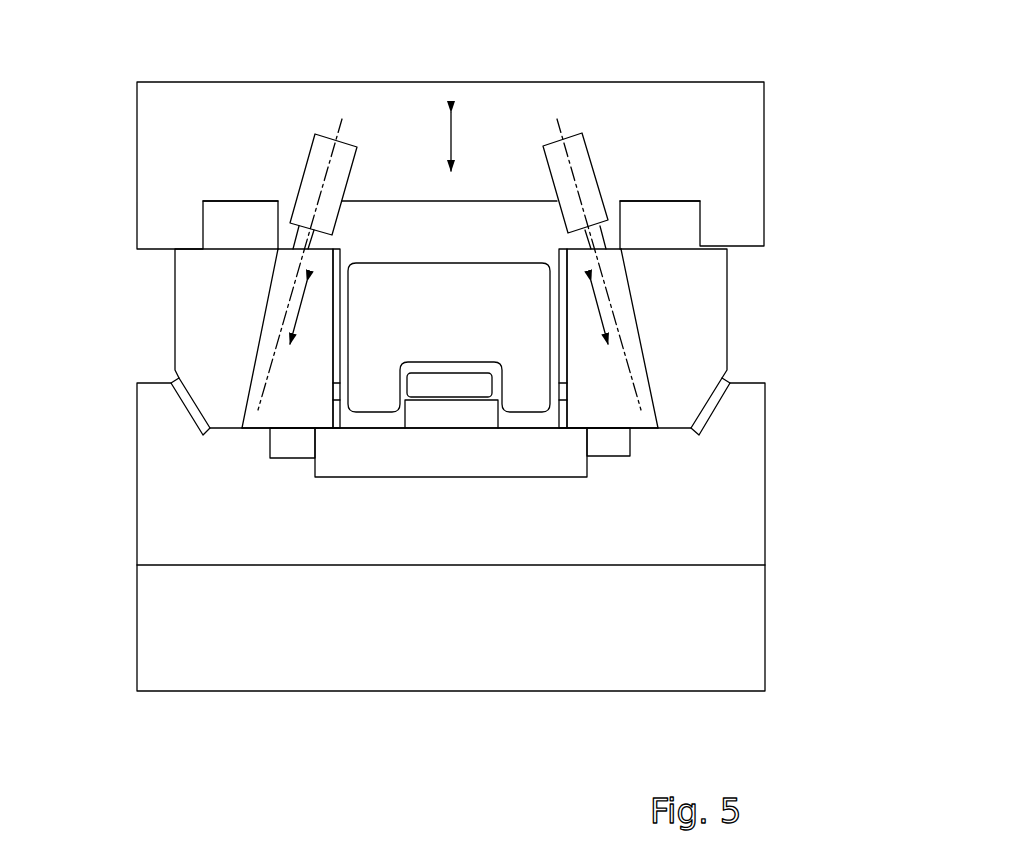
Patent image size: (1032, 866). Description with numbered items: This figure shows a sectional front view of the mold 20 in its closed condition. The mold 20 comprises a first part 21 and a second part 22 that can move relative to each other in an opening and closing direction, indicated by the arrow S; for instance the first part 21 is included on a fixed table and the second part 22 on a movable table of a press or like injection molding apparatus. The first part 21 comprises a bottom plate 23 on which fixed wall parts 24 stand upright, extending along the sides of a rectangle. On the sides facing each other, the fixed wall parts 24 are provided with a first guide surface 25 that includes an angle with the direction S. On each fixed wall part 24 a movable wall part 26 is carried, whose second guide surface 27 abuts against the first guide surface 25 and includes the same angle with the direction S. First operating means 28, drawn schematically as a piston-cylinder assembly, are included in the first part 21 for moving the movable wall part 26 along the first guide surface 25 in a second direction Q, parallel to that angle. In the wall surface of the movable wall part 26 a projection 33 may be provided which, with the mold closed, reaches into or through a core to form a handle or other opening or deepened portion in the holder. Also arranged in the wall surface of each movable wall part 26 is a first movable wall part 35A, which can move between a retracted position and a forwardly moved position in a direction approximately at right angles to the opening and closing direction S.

The mold 20 is at (805, 242).
The first part 21 is at (788, 111).
The second part 22 is at (790, 630).
The bottom plate 23 is at (727, 159).
The fixed wall parts 24 is at (207, 316).
The first guide surface 25 is at (271, 281).
The movable wall part 26 is at (303, 360).
The second guide surface 27 is at (450, 338).
The first operating means 28 is at (449, 215).
The projection 33 is at (475, 383).
The first movable wall part 35A is at (376, 382).